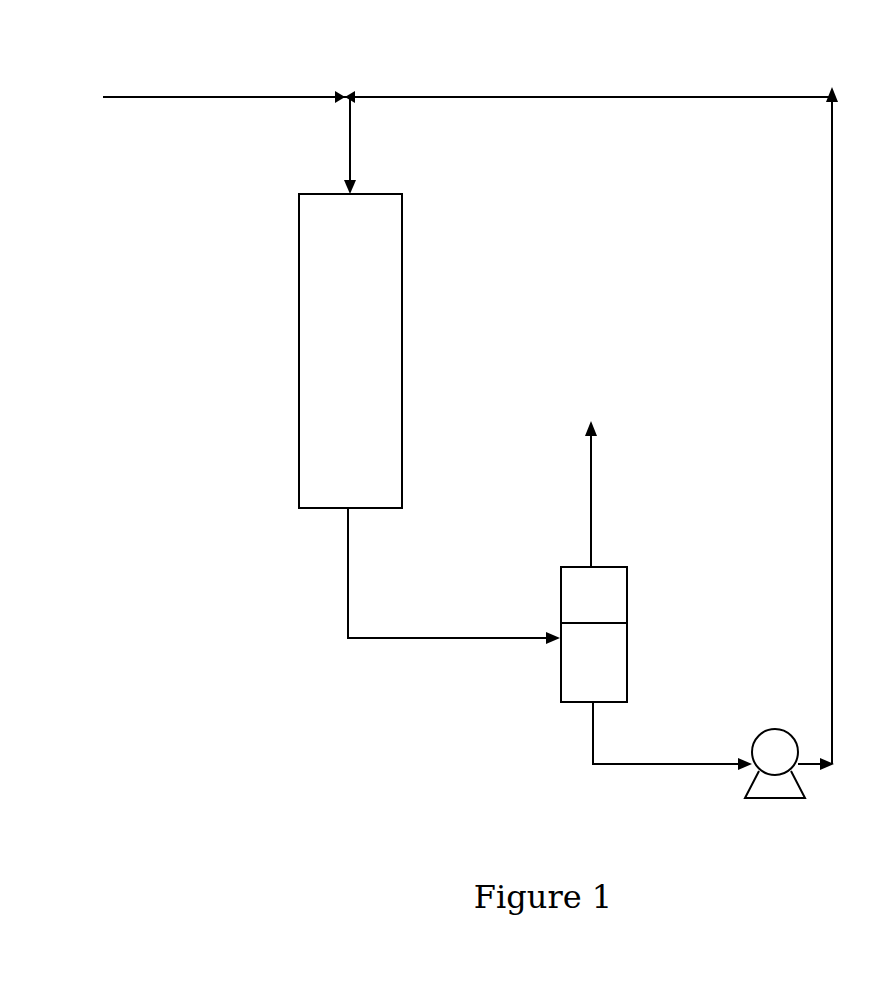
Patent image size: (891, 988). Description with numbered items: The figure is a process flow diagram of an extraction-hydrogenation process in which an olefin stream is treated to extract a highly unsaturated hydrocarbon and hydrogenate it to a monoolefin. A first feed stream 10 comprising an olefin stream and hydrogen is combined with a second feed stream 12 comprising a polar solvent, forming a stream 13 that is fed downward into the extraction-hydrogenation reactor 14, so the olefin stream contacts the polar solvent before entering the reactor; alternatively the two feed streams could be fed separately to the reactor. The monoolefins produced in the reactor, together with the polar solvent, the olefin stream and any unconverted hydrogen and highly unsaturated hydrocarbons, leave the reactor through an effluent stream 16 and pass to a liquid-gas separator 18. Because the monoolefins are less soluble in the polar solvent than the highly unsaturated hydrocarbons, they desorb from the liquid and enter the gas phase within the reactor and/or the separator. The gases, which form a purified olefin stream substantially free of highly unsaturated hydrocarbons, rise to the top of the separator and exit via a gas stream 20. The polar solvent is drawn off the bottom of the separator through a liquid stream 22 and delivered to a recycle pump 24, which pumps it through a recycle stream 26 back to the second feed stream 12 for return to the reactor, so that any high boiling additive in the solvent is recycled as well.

The first feed stream 10 is at (224, 136).
The second feed stream 12 is at (588, 57).
The stream 13 is at (382, 142).
The extraction-hydrogenation reactor 14 is at (337, 330).
The effluent stream 16 is at (414, 576).
The liquid-gas separator 18 is at (581, 610).
The gas stream 20 is at (628, 494).
The liquid stream 22 is at (672, 772).
The recycle pump 24 is at (756, 722).
The recycle stream 26 is at (797, 428).